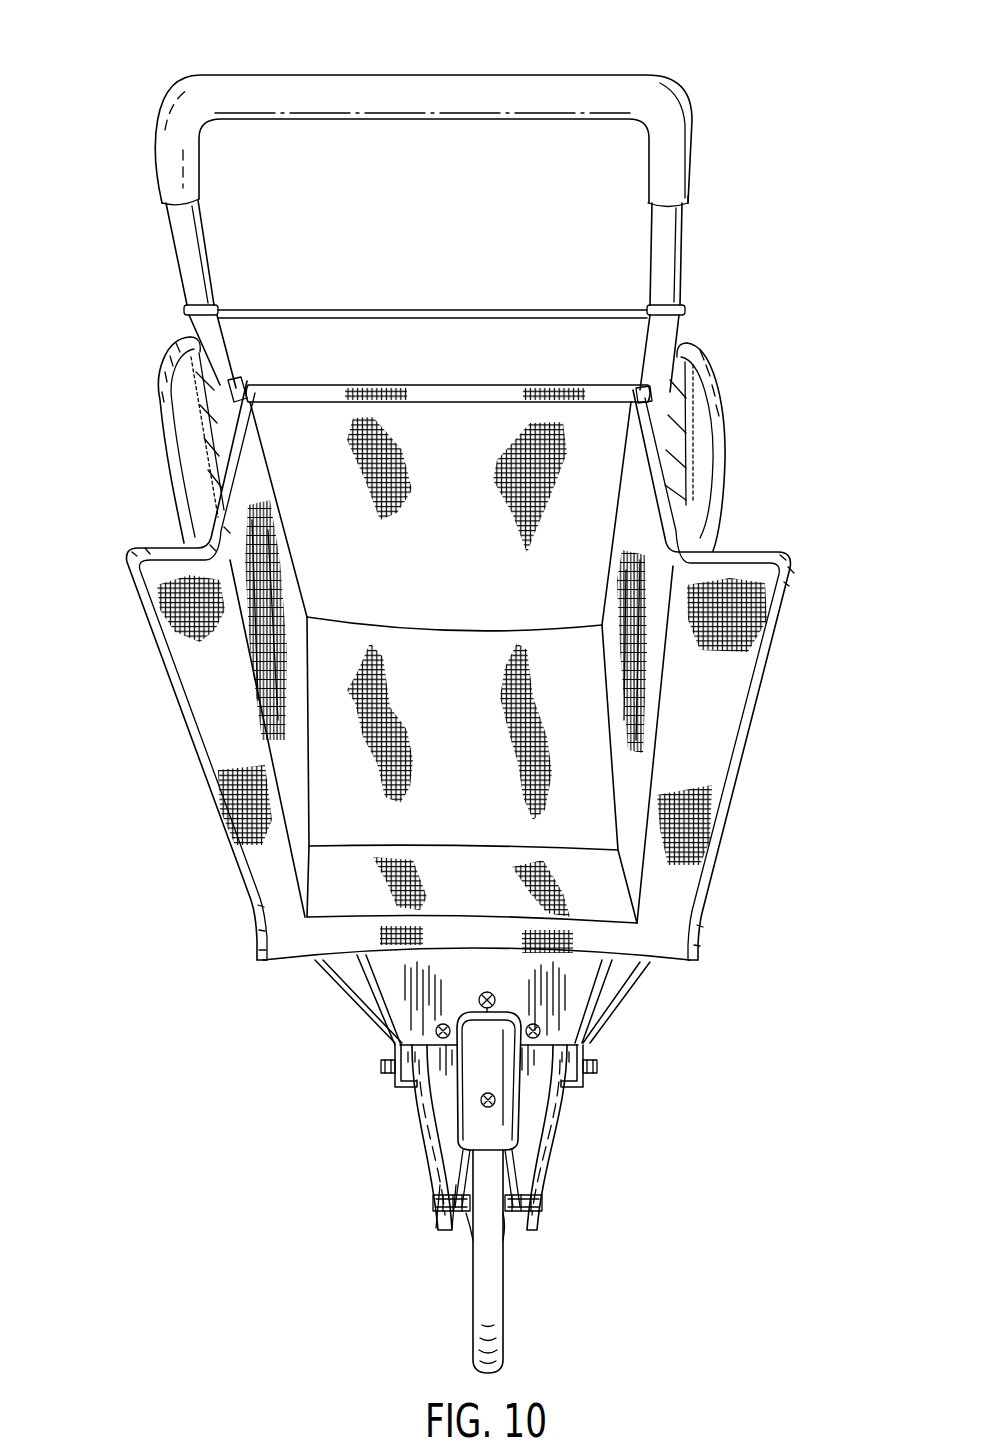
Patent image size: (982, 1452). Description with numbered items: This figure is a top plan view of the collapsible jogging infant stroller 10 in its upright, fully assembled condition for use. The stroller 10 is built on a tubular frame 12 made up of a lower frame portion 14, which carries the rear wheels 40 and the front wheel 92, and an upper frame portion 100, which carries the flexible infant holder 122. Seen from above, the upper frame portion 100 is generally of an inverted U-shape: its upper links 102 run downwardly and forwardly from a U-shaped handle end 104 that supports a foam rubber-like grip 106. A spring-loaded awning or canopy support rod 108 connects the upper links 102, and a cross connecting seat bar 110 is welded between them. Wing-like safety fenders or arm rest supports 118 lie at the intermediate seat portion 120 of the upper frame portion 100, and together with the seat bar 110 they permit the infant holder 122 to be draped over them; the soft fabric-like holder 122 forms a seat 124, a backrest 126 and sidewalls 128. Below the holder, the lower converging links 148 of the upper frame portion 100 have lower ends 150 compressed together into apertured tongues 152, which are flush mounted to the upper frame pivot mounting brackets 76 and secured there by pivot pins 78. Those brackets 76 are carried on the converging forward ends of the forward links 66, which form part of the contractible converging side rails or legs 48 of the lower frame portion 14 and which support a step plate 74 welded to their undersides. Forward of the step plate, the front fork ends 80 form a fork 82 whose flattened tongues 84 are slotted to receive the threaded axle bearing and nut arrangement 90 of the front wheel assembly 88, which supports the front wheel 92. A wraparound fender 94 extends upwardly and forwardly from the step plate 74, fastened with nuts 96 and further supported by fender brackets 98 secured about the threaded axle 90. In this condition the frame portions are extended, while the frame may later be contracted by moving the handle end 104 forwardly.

The collapsible jogging infant stroller 10 is at (192, 72).
The tubular frame 12 is at (688, 222).
The lower frame portion 14 is at (432, 1112).
The wheel 40 is at (170, 443).
The side rails or legs 48 is at (550, 1123).
The forward links 66 is at (528, 1137).
The step plate 74 is at (585, 995).
The upper frame pivot mounting bracket 76 is at (410, 1090).
The pivot pin 78 is at (385, 1065).
The front fork ends 80 is at (540, 1157).
The fork 82 is at (540, 1192).
The tongues, tabs or ears 84 is at (536, 1209).
The front wheel assembly 88 is at (467, 1220).
The threaded axle bearing and nut arrangement 90 is at (444, 1251).
The front wheel 92 is at (473, 1335).
The wraparound fender 94 is at (475, 1092).
The nuts 96 is at (437, 1031).
The fender brackets 98 is at (443, 1183).
The upper frame portion 100 is at (683, 254).
The upper links 102 is at (683, 287).
The U-shaped handle end 104 is at (422, 75).
The foam rubber-like grip 106 is at (425, 115).
The awning or canopy support rod 108 is at (445, 292).
The cross connecting seat bar 110 is at (236, 378).
The wing-like safety fenders or arm rest supports 118 is at (168, 692).
The intermediate seat portion 120 is at (283, 758).
The flexible infant holder 122 is at (368, 650).
The seat 124 is at (473, 757).
The backrest 126 is at (460, 549).
The sidewalls 128 is at (243, 592).
The lower converging links 148 is at (311, 966).
The lower ends 150 is at (392, 1057).
The tongues, tabs or ears 152 is at (412, 1051).